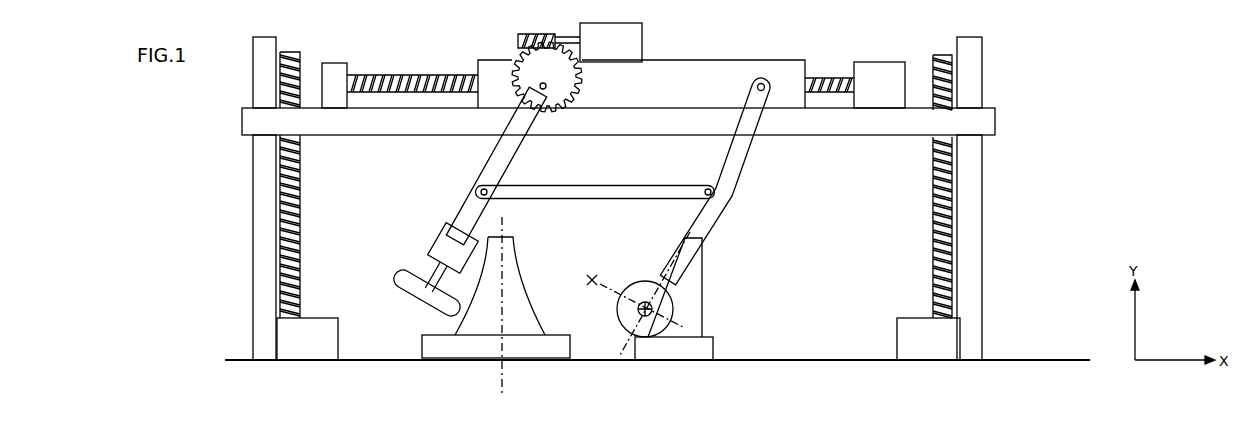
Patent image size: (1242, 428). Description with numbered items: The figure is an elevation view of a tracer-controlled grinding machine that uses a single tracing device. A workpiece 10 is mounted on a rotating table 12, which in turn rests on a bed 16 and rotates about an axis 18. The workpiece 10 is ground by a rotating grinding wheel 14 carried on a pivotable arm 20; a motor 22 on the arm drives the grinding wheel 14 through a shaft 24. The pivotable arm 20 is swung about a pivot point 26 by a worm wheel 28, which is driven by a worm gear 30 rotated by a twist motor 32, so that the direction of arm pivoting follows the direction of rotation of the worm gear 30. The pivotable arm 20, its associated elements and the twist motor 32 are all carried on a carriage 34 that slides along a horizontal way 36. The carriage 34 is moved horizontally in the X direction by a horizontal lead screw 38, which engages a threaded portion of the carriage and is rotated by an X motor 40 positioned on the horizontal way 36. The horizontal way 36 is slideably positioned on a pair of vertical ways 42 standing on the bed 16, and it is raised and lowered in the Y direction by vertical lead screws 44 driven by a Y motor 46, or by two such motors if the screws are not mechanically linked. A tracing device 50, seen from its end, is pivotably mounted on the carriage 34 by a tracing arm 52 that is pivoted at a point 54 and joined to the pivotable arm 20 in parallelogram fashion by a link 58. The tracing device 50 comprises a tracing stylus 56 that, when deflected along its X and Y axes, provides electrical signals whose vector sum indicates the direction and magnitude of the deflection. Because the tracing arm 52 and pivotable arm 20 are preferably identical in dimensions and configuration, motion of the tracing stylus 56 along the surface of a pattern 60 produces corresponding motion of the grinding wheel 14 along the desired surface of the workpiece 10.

The workpiece 10 is at (525, 272).
The rotating table 12 is at (570, 341).
The grinding wheel 14 is at (398, 283).
The bed 16 is at (645, 388).
The axis 18 is at (503, 382).
The pivotable arm 20 is at (522, 160).
The motor 22 is at (437, 238).
The shaft 24 is at (430, 268).
The pivot point 26 is at (552, 84).
The worm wheel 28 is at (582, 88).
The worm gear 30 is at (518, 37).
The twist motor 32 is at (642, 42).
The carriage 34 is at (720, 60).
The horizontal way 36 is at (838, 137).
The horizontal lead screw 38 is at (410, 75).
The X motor 40 is at (882, 62).
The vertical ways 42 is at (253, 37).
The vertical lead screws 44 is at (300, 218).
The Y motor 46 is at (338, 326).
The tracing device 50 is at (640, 271).
The tracing arm 52 is at (733, 172).
The pivot 54 is at (757, 87).
The tracing stylus 56 is at (638, 309).
The link 58 is at (640, 185).
The pattern 60 is at (702, 276).